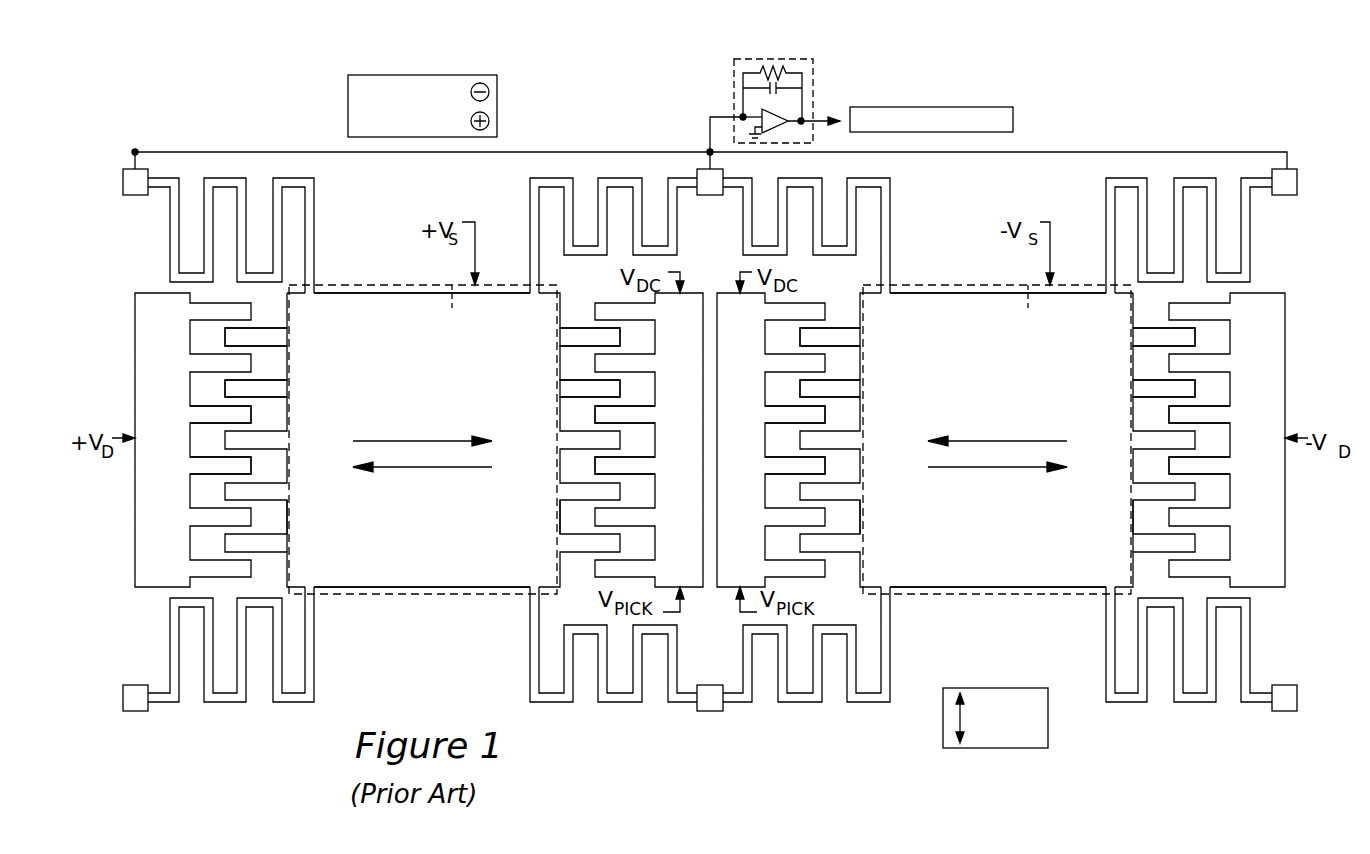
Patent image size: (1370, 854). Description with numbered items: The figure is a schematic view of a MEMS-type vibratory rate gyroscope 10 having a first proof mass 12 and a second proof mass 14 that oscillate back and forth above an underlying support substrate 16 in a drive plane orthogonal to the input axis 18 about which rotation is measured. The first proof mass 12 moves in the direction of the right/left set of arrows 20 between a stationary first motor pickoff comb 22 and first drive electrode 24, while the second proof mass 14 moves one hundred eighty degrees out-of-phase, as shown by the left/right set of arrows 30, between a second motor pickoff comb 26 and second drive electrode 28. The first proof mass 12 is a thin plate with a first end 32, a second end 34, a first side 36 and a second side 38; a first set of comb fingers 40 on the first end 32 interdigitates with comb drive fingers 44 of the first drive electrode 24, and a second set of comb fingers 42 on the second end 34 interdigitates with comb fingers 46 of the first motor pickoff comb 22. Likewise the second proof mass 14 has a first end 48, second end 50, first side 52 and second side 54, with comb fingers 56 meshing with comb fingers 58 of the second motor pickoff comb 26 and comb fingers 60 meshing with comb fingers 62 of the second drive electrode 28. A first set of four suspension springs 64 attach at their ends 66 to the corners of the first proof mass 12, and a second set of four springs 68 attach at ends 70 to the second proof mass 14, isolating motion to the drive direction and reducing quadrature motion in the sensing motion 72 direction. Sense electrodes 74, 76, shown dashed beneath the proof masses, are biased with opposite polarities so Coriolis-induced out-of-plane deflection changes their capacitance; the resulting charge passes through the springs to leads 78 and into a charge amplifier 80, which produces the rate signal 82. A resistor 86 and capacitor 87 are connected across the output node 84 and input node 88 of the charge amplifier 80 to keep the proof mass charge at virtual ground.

The MEMS-type gyroscope 10 is at (609, 96).
The first proof mass 12 is at (430, 587).
The second proof mass 14 is at (1003, 587).
The support substrate 16 is at (436, 679).
The input axis 18 is at (1003, 748).
The right/left set of arrows 20 is at (423, 441).
The first motor pickoff comb 22 is at (696, 547).
The first drive electrode 24 is at (153, 573).
The second motor pickoff comb 26 is at (749, 547).
The second drive electrode 28 is at (1267, 573).
The left/right set of arrows 30 is at (997, 441).
The first end 32 is at (287, 521).
The second end 34 is at (558, 521).
The first side 36 is at (370, 293).
The second side 38 is at (365, 587).
The first set of comb fingers 40 is at (258, 385).
The second set of comb fingers 42 is at (575, 384).
The comb drive fingers 44 is at (212, 448).
The comb fingers 46 is at (633, 450).
The first end 48 is at (862, 521).
The second end 50 is at (1131, 521).
The first side 52 is at (940, 293).
The second side 54 is at (940, 587).
The first set of comb fingers 56 is at (845, 384).
The comb fingers 58 is at (787, 450).
The second set of comb fingers 60 is at (1162, 385).
The comb fingers 62 is at (1208, 448).
The first set of four suspension springs 64 is at (225, 178).
The spring ends 66 is at (318, 287).
The second set of four springs 68 is at (873, 178).
The spring ends 70 is at (890, 287).
The sensing motion 72 is at (348, 84).
The first sense electrode 74 is at (438, 280).
The second sense electrode 76 is at (1013, 280).
The leads 78 is at (135, 196).
The charge amplifier 80 is at (813, 72).
The rate signal 82 is at (1013, 107).
The output node 84 is at (802, 120).
The resistor 86 is at (778, 72).
The capacitor 87 is at (768, 86).
The input node 88 is at (742, 115).